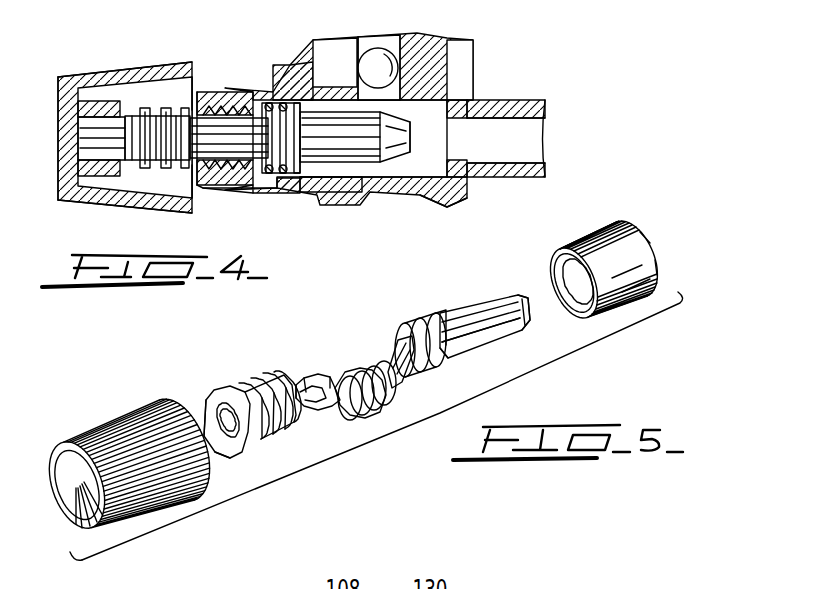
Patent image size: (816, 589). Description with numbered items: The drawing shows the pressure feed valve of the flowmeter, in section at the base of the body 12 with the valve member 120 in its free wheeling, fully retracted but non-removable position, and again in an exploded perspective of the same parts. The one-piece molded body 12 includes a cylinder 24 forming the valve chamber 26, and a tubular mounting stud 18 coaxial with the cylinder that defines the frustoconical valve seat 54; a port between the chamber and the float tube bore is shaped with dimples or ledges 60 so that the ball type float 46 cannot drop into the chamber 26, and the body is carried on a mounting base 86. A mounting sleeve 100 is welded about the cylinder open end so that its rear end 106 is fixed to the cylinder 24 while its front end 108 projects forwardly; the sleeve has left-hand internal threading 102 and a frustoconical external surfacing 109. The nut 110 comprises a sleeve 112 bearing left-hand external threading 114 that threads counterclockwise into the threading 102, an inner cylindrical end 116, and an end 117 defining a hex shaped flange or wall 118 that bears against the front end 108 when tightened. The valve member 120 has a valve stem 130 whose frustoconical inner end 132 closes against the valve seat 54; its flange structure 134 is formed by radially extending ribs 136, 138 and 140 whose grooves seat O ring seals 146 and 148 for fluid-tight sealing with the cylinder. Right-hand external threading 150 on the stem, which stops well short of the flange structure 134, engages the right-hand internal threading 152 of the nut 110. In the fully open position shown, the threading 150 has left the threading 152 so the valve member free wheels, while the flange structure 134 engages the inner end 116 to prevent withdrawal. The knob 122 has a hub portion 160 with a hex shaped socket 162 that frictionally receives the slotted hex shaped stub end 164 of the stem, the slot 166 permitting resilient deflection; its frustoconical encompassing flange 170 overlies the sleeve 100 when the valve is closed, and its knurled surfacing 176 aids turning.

In FIG. 4, the body 12 is at (478, 41).
In FIG. 4, the tubular mounting stud 18 is at (510, 100).
In FIG. 4, the cylinder 24 is at (378, 60).
In FIG. 4, the valve chamber 26 is at (410, 195).
In FIG. 4, the ball type float 46 is at (394, 88).
In FIG. 4, the frustoconical valve seat 54 is at (447, 163).
In FIG. 4, the dimples or ledges 60 is at (405, 133).
In FIG. 5, the mounting base 86 is at (642, 203).
In FIG. 4, the mounting sleeve 100 is at (245, 88).
In FIG. 5, the mounting sleeve 100 is at (637, 245).
In FIG. 4, the internal threading 102 is at (231, 195).
In FIG. 5, the internal threading 102 is at (568, 270).
In FIG. 5, the rear end 106 is at (662, 276).
In FIG. 4, the front end 108 is at (200, 187).
In FIG. 5, the front end 108 is at (565, 250).
In FIG. 5, the external surfacing 109 is at (603, 223).
In FIG. 4, the nut 110 is at (203, 78).
In FIG. 5, the nut 110 is at (262, 374).
In FIG. 5, the sleeve 112 is at (285, 420).
In FIG. 4, the external threading 114 is at (222, 88).
In FIG. 5, the external threading 114 is at (260, 450).
In FIG. 4, the inner cylindrical end 116 is at (248, 193).
In FIG. 5, the inner cylindrical end 116 is at (292, 428).
In FIG. 5, the end 117 is at (235, 452).
In FIG. 4, the hex shaped flange or wall 118 is at (147, 186).
In FIG. 5, the hex shaped flange or wall 118 is at (233, 458).
In FIG. 4, the valve member 120 is at (311, 178).
In FIG. 5, the valve member 120 is at (415, 308).
In FIG. 4, the knob 122 is at (65, 68).
In FIG. 5, the knob 122 is at (123, 390).
In FIG. 4, the valve stem 130 is at (352, 150).
In FIG. 5, the valve stem 130 is at (453, 310).
In FIG. 4, the inner end 132 is at (425, 118).
In FIG. 5, the inner end 132 is at (522, 322).
In FIG. 4, the flange structure 134 is at (262, 196).
In FIG. 5, the flange structure 134 is at (392, 315).
In FIG. 4, the rib 136 is at (255, 135).
In FIG. 5, the rib 136 is at (418, 373).
In FIG. 4, the rib 138 is at (405, 133).
In FIG. 5, the rib 138 is at (425, 362).
In FIG. 4, the rib 140 is at (366, 138).
In FIG. 5, the rib 140 is at (483, 343).
In FIG. 4, the O ring seal 146 is at (269, 93).
In FIG. 5, the O ring seal 146 is at (397, 328).
In FIG. 4, the O ring seal 148 is at (292, 88).
In FIG. 5, the O ring seal 148 is at (421, 322).
In FIG. 4, the external threading 150 is at (147, 165).
In FIG. 5, the external threading 150 is at (368, 405).
In FIG. 4, the internal threading 152 is at (197, 123).
In FIG. 5, the internal threading 152 is at (222, 427).
In FIG. 4, the hub portion 160 is at (105, 105).
In FIG. 4, the hex shaped socket 162 is at (62, 158).
In FIG. 4, the hex shaped stub end 164 is at (110, 133).
In FIG. 5, the hex shaped stub end 164 is at (307, 375).
In FIG. 5, the slot 166 is at (328, 404).
In FIG. 4, the encompassing flange 170 is at (135, 70).
In FIG. 5, the knurling 176 is at (112, 430).